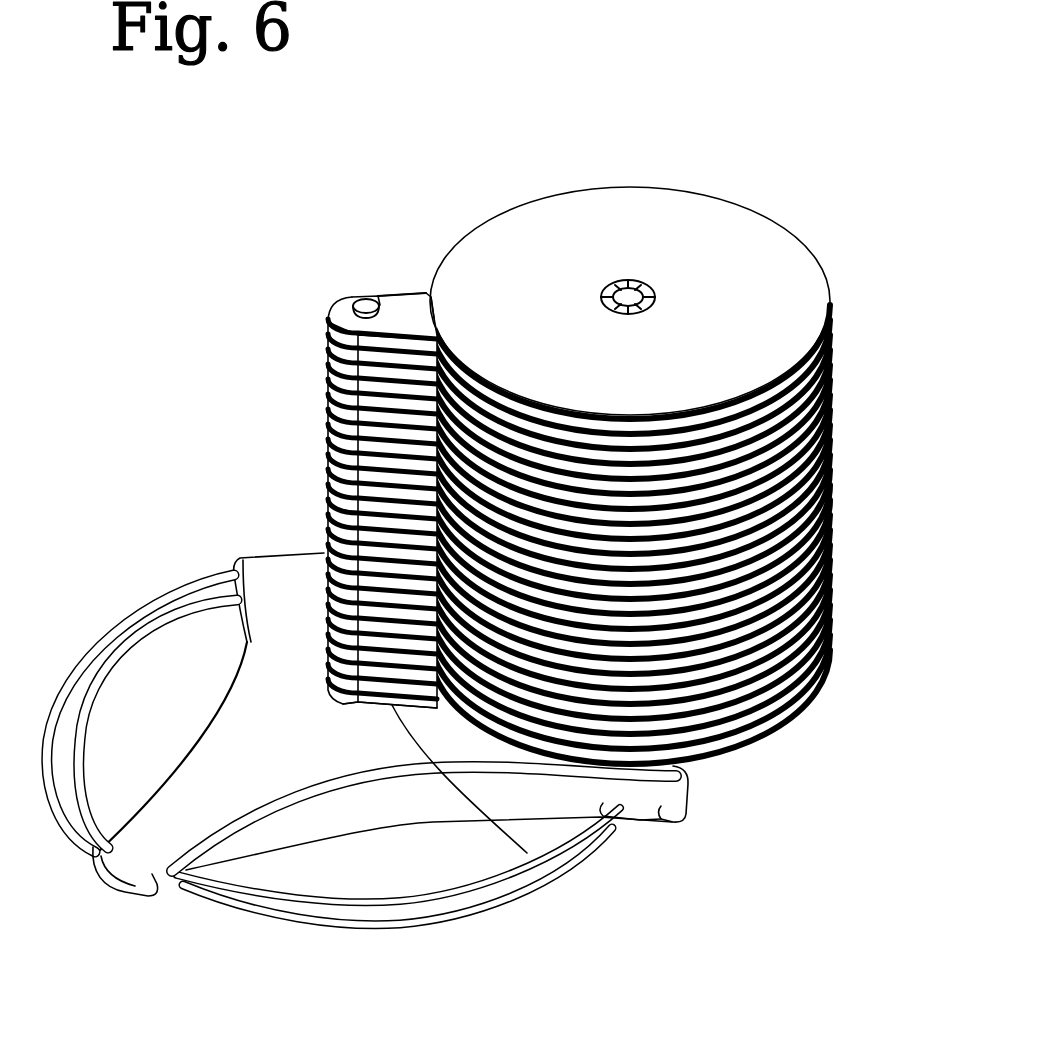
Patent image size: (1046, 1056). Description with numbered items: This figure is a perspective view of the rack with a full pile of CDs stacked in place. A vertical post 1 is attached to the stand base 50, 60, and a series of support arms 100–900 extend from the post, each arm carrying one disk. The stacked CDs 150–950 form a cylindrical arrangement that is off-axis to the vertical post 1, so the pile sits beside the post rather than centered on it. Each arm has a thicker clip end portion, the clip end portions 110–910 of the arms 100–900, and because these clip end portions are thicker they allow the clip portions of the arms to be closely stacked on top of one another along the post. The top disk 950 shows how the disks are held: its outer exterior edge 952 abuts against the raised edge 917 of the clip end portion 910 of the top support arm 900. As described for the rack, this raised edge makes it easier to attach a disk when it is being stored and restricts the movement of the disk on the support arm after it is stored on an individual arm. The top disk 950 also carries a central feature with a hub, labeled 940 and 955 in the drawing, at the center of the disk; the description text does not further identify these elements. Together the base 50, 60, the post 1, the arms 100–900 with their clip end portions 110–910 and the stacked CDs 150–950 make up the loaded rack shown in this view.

The post 1 is at (362, 307).
The stand base 50 is at (468, 893).
The stand base 60 is at (330, 762).
The support arm 100 is at (333, 702).
The clip end portion 110 is at (370, 704).
The CD 150 is at (768, 736).
The top support arm 900 is at (338, 306).
The clip end portion 910 is at (401, 303).
The raised edge 917 is at (420, 300).
The center hole 940 is at (634, 291).
The top disk 950 is at (752, 244).
The outer exterior edge 952 is at (432, 307).
The hub 955 is at (655, 297).